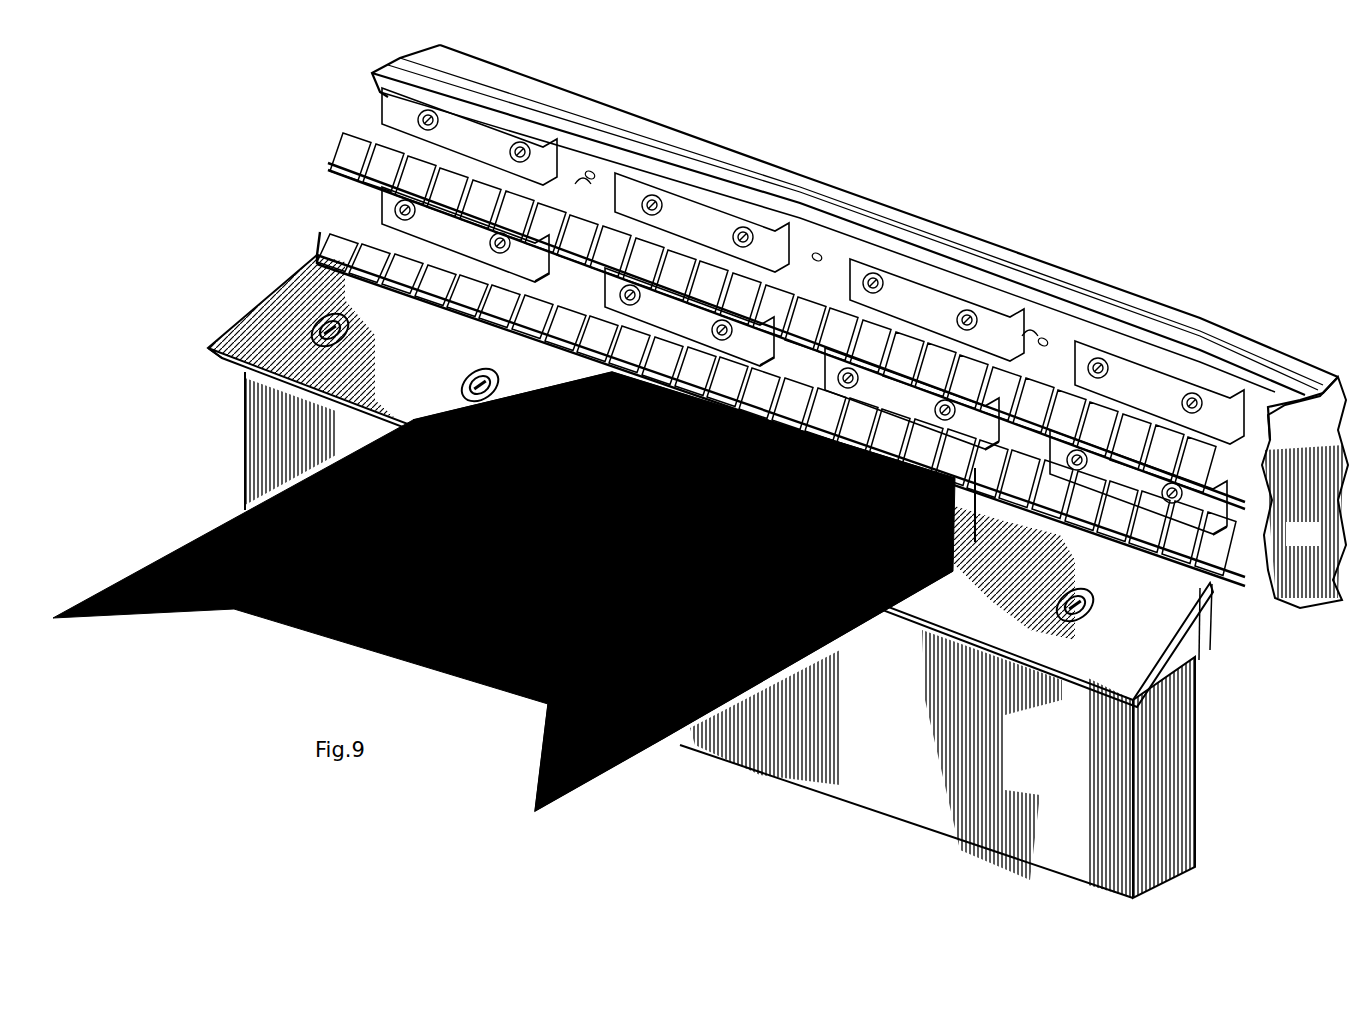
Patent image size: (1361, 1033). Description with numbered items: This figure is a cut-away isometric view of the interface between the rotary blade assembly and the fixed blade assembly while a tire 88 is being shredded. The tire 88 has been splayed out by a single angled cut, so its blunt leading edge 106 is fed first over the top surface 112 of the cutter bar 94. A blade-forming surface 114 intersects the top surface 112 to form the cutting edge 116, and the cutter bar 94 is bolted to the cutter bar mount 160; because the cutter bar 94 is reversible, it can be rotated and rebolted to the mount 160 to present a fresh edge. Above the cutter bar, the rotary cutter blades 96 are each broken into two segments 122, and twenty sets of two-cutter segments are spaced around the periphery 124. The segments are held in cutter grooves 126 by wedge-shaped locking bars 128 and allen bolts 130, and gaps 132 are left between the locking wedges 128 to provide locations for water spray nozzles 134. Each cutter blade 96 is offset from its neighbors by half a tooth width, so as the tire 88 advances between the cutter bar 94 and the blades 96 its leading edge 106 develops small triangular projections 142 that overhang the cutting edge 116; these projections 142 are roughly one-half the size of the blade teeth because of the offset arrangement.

The tire 88 is at (504, 595).
The cutter bar 94 is at (1047, 581).
The cutter blades 96 is at (340, 125).
The leading edge 106 is at (684, 436).
The top surface 112 is at (1153, 613).
The blade-forming surface 114 is at (1200, 662).
The cutting edge 116 is at (1206, 615).
The segments 122 is at (487, 367).
The periphery 124 is at (770, 162).
The cutter grooves 126 is at (1280, 416).
The locking bars 128 is at (478, 138).
The allen bolts 130 is at (370, 98).
The gaps 132 is at (583, 180).
The water spray nozzles 134 is at (590, 172).
The triangular projections 142 is at (681, 805).
The cutter bar mount 160 is at (1197, 826).